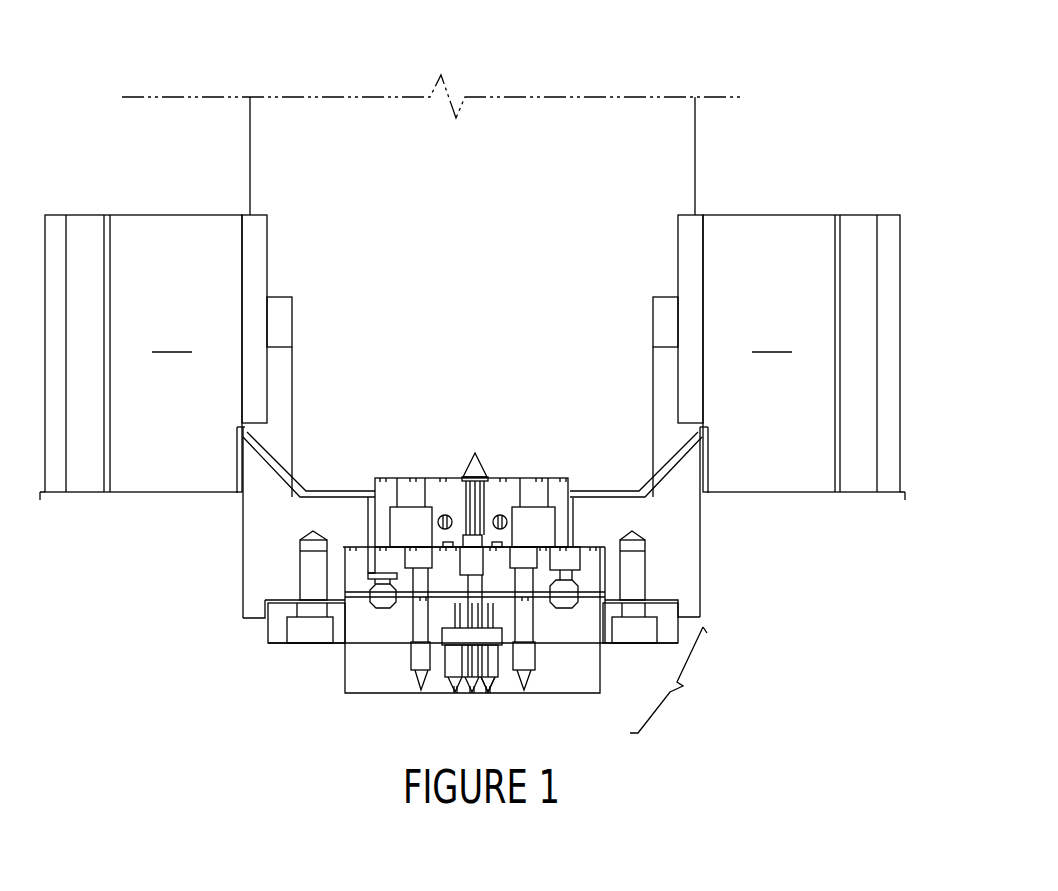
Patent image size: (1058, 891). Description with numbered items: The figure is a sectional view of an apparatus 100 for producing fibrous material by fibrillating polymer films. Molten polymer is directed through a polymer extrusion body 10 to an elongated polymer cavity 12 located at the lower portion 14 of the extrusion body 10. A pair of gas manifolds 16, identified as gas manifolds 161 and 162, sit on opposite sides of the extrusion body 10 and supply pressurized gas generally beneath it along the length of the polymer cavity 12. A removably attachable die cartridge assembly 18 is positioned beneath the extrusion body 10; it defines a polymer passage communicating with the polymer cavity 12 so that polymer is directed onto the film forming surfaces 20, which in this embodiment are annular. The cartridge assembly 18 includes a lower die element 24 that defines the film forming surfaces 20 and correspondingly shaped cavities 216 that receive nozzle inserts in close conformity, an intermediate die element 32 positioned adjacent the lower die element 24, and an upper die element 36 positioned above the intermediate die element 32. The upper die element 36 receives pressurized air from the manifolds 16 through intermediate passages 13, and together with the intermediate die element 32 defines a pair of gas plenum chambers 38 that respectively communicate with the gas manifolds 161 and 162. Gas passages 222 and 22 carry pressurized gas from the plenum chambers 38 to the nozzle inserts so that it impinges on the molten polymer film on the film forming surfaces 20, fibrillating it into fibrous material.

The apparatus for producing fibrous material 100 is at (598, 60).
The polymer extrusion body 10 is at (327, 123).
The gas manifold 16 is at (472, 399).
The gas manifold 161 is at (141, 357).
The gas manifold 162 is at (804, 357).
The lower portion of extrusion body 14 is at (320, 478).
The intermediate passages 13 is at (373, 515).
The polymer cavity 12 is at (475, 447).
The gas passage 222 is at (573, 560).
The upper die element 36 is at (592, 558).
The gas plenum chamber 38 is at (373, 603).
The intermediate die element 32 is at (277, 634).
The lower die element 24 is at (368, 685).
The gas passage 22 is at (455, 611).
The cavity 216 is at (452, 672).
The film forming surface 20 is at (497, 680).
The die cartridge assembly 18 is at (668, 680).